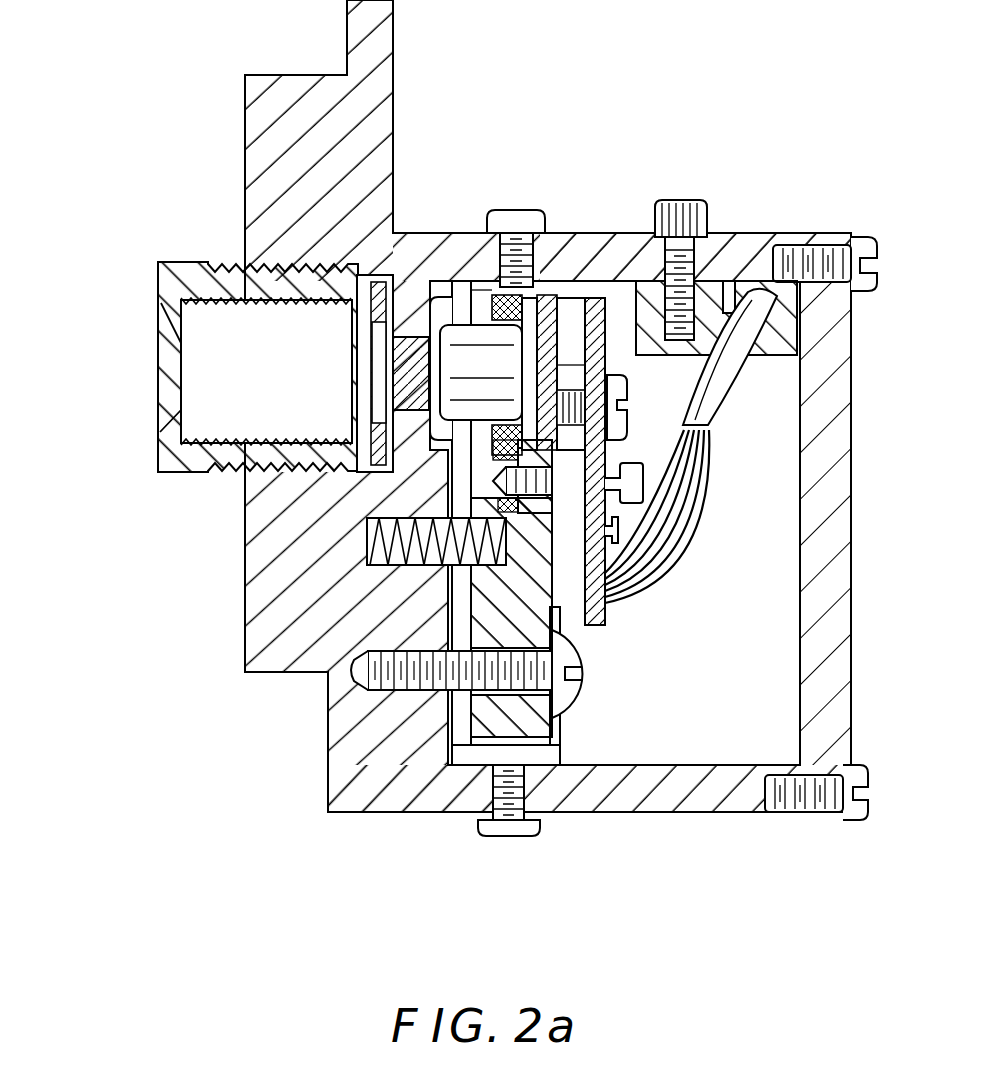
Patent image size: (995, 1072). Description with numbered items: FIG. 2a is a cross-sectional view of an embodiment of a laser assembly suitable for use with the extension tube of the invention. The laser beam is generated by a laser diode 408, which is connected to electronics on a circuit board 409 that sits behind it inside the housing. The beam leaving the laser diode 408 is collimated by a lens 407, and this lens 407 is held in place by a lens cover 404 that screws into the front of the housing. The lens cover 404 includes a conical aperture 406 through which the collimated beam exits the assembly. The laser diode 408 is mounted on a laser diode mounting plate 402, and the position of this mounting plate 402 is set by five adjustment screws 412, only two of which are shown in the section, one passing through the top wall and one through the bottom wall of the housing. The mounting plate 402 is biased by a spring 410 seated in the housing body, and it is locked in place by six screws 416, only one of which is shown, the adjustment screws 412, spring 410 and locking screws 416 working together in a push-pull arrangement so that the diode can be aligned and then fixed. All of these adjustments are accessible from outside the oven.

The laser diode mounting plate 402 is at (560, 748).
The lens cover 404 is at (197, 262).
The conical aperture 406 is at (157, 352).
The lens 407 is at (412, 345).
The laser diode 408 is at (458, 345).
The circuit board 409 is at (607, 622).
The spring 410 is at (367, 540).
The adjustment screws 412 is at (514, 210).
The screws 416 is at (580, 692).